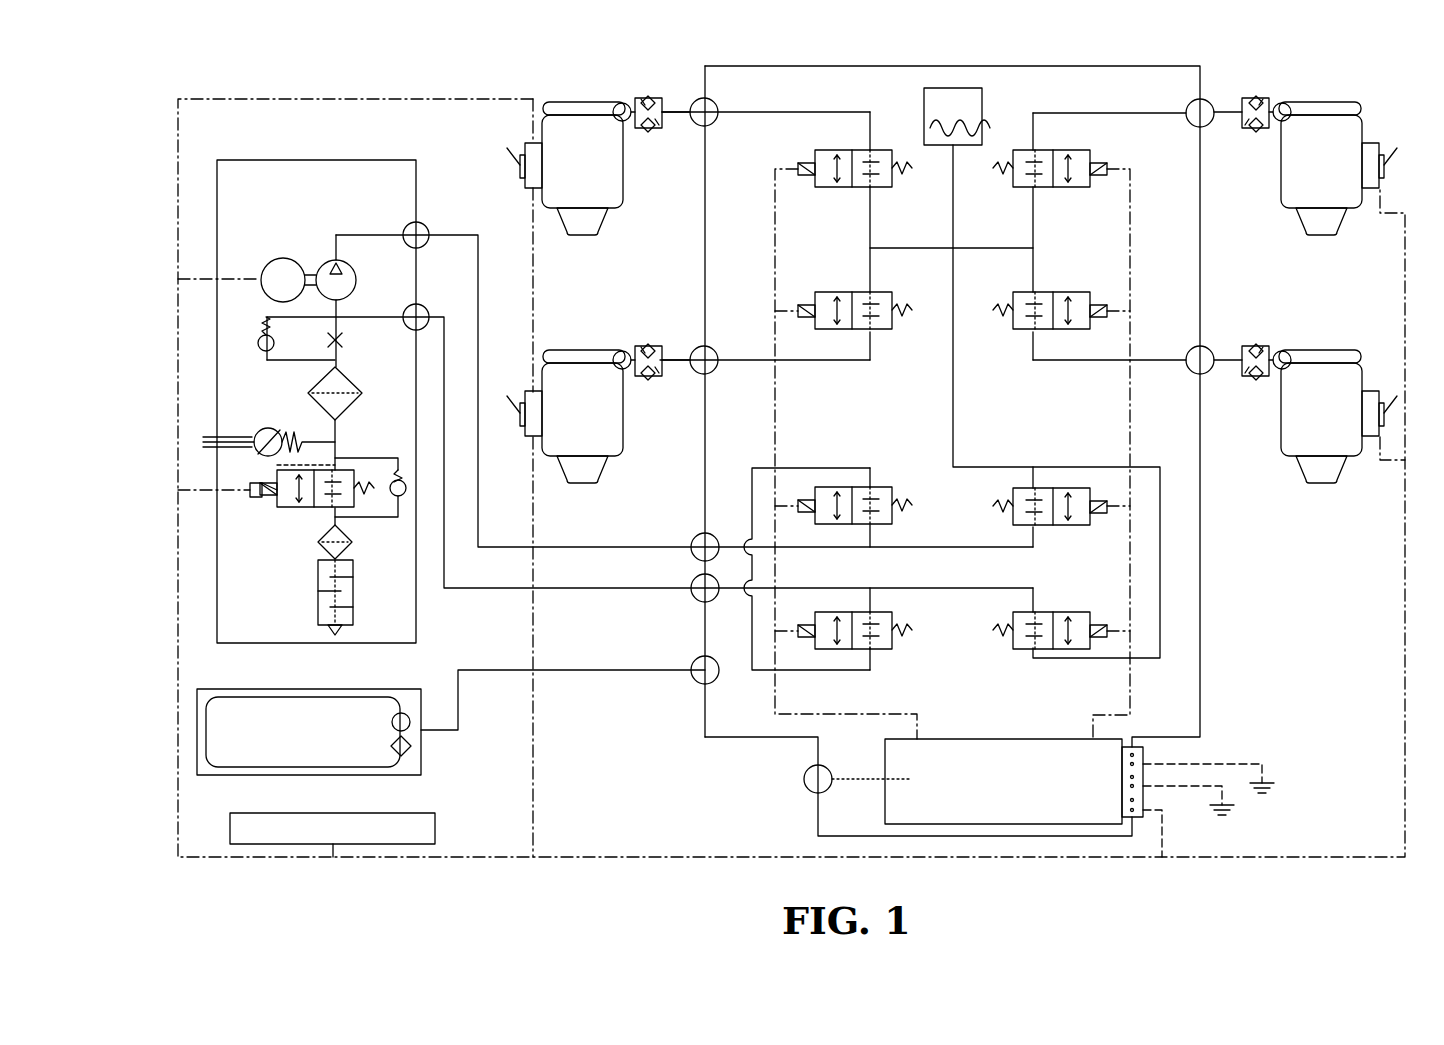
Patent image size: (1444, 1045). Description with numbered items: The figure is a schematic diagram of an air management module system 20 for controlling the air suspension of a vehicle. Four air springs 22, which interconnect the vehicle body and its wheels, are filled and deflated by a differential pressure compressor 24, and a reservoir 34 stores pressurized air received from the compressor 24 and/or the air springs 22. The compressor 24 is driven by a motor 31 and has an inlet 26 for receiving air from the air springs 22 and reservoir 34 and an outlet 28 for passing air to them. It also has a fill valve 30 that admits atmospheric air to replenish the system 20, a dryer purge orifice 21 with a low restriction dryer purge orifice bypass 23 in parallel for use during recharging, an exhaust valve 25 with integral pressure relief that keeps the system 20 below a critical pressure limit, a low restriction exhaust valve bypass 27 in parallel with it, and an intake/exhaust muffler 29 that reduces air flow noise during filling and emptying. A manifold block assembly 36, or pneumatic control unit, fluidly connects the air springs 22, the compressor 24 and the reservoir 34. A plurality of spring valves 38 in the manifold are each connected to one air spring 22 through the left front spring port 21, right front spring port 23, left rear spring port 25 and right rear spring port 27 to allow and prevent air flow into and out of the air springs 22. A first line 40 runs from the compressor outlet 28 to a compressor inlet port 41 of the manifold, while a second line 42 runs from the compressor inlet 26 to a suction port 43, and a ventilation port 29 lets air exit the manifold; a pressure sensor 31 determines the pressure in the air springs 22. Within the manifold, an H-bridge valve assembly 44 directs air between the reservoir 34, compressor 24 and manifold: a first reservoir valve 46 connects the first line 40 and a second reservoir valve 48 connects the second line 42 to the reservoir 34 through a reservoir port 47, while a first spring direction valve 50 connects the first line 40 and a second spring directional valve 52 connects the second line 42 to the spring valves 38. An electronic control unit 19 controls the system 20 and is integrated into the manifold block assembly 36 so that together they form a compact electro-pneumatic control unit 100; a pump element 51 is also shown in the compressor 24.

The electronic control unit 19 is at (908, 806).
The air management module system 20 is at (1348, 68).
The dryer purge orifice / left front spring port 21 is at (328, 343).
The air springs 22 is at (623, 193).
The dryer purge orifice bypass / right front spring port 23 is at (260, 338).
The differential pressure compressor 24 is at (425, 166).
The exhaust valve / left rear spring port 25 is at (280, 509).
The inlet 26 is at (427, 308).
The exhaust valve bypass / right rear spring port 27 is at (398, 497).
The outlet 28 is at (428, 228).
The intake/exhaust muffler / ventilation port 29 is at (318, 613).
The fill valve 30 is at (262, 455).
The motor / pressure sensor 31 is at (281, 258).
The reservoir 34 is at (346, 698).
The manifold block assembly 36 is at (758, 86).
The spring valves 38 is at (892, 179).
The first line 40 is at (479, 343).
The compressor inlet port 41 is at (708, 533).
The second line 42 is at (468, 584).
The suction port 43 is at (700, 600).
The H-bridge valve assembly 44 is at (925, 437).
The first reservoir valve 46 is at (877, 487).
The reservoir port 47 is at (700, 685).
The second reservoir valve 48 is at (893, 643).
The first spring direction valve 50 is at (1012, 498).
The pump 51 is at (348, 262).
The second spring directional valve 52 is at (1012, 617).
The electro-pneumatic control unit 100 is at (695, 502).